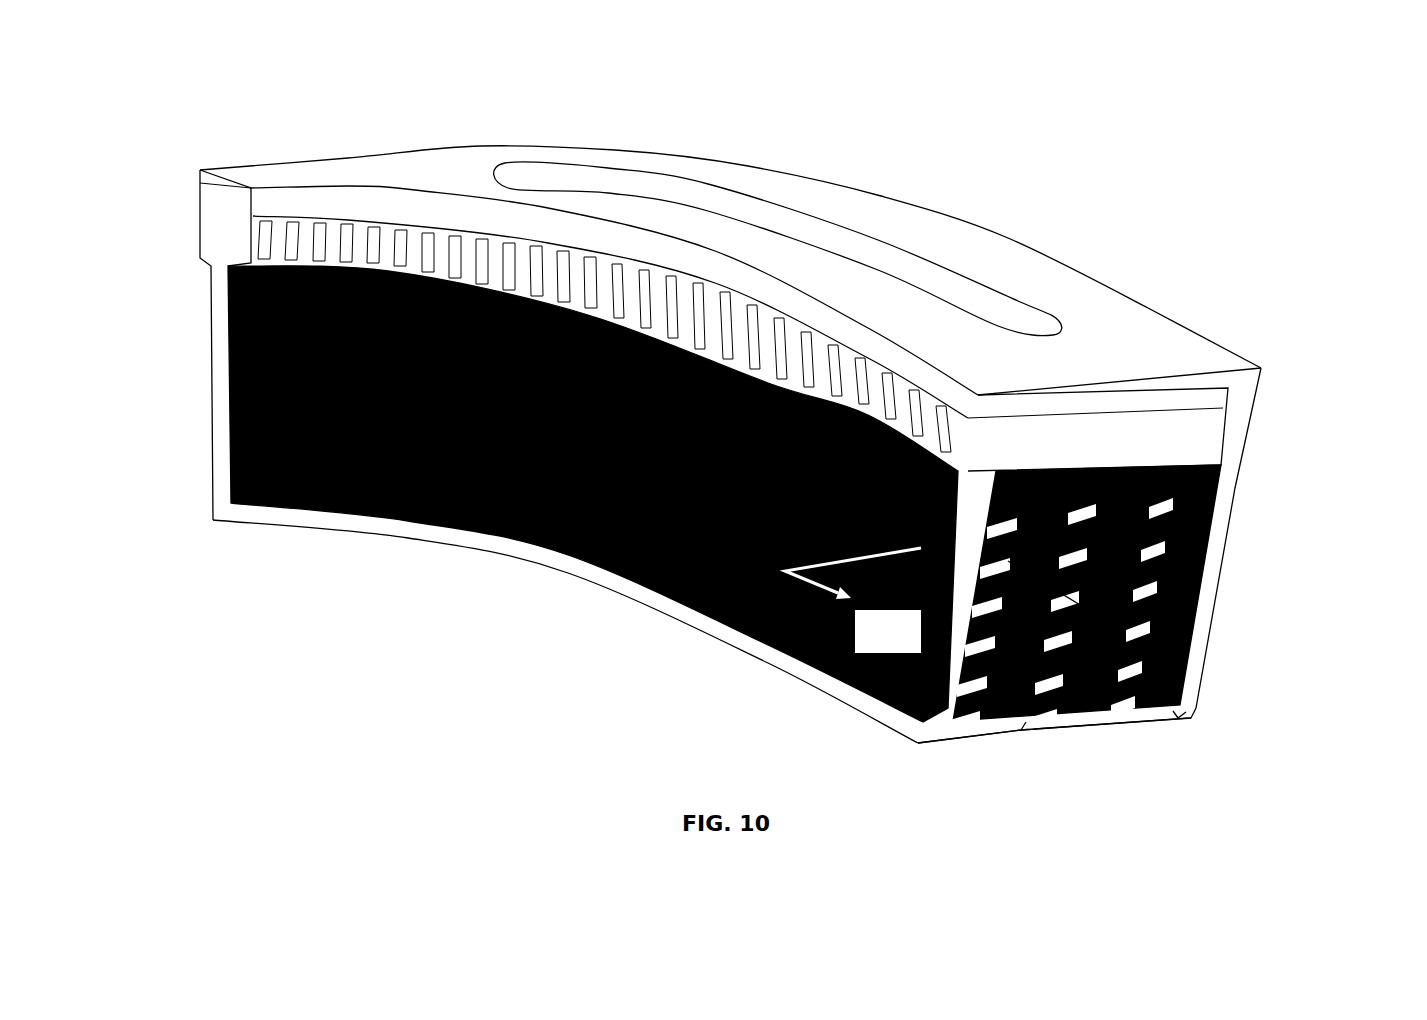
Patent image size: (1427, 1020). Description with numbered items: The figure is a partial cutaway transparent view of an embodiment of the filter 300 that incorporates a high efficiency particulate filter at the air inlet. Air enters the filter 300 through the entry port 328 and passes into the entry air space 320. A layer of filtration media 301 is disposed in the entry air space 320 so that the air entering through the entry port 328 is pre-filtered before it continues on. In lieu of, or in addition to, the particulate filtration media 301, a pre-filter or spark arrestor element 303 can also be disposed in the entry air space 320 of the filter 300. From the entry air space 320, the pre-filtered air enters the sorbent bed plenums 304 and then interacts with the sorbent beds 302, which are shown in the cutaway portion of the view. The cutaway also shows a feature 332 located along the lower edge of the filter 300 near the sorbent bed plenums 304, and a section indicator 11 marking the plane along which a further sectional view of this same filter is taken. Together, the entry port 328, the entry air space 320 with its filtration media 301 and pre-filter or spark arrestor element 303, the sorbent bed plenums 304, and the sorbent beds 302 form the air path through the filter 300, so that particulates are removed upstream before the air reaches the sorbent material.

The filter 300 is at (195, 104).
The filtration media 301 is at (295, 246).
The sorbent beds 302 is at (660, 480).
The pre-filter or spark arrestor element 303 is at (318, 172).
The sorbent bed plenums 304 is at (980, 723).
The entry air space 320 is at (199, 225).
The entry port 328 is at (922, 242).
The gap 332 is at (1033, 734).
The section line 11 is at (1376, 503).